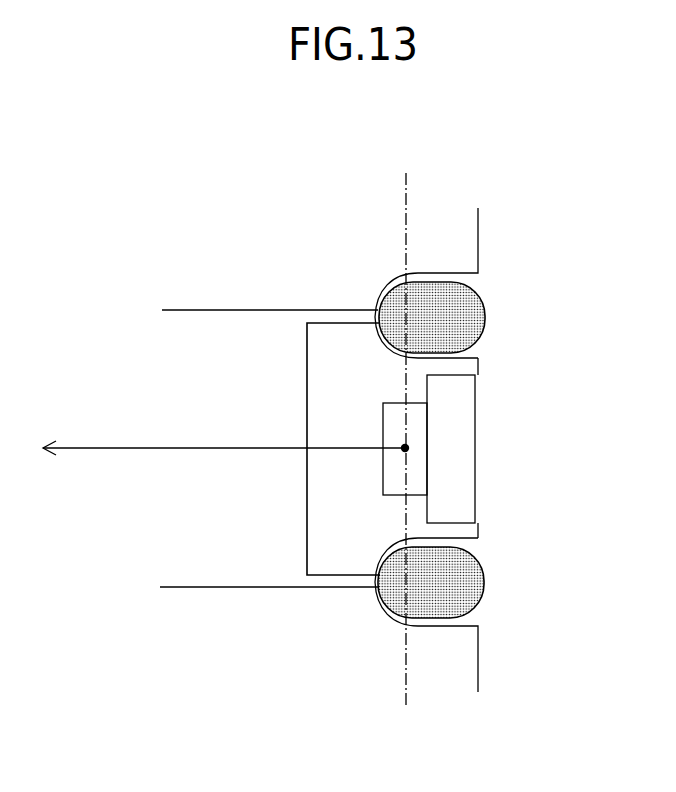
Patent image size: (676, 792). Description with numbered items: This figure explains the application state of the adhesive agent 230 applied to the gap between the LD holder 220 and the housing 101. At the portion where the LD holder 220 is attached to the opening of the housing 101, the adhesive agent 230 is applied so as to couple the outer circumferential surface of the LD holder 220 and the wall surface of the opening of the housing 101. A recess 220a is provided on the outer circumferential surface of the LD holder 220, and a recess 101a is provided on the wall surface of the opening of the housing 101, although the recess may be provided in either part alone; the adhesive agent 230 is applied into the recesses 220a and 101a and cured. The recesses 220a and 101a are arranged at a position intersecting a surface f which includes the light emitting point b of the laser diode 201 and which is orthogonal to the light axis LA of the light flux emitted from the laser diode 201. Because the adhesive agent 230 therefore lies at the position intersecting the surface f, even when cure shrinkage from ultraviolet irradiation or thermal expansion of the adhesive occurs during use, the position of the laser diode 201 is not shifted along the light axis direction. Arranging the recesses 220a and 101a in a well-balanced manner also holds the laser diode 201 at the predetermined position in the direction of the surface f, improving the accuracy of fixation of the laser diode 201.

The housing 101 is at (252, 297).
The recess 101a is at (457, 275).
The LD holder 220 is at (307, 402).
The recess 220a is at (458, 357).
The adhesive agent 230 is at (467, 318).
The laser diode 201 is at (462, 450).
The light emitting point b is at (403, 446).
The surface f is at (408, 196).
The light axis LA is at (133, 445).